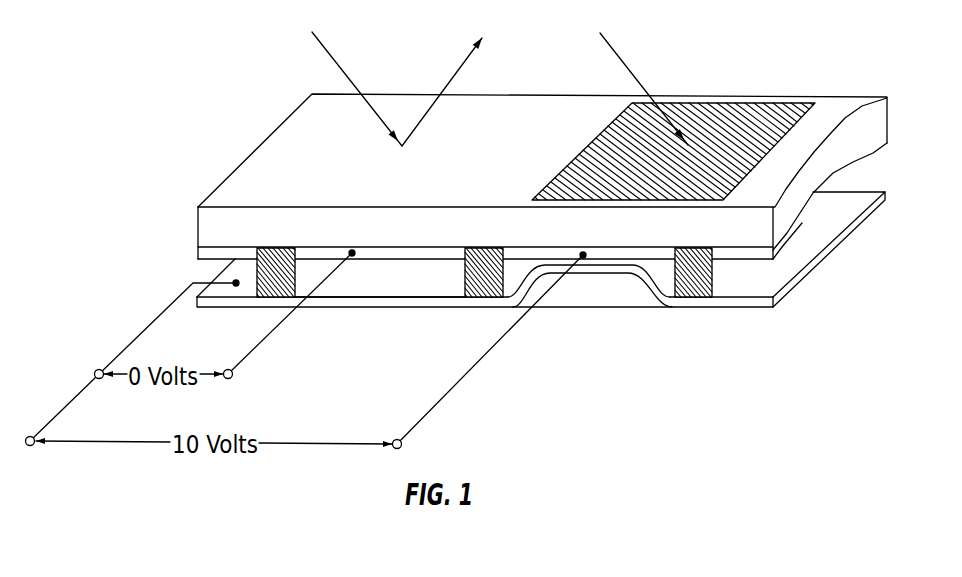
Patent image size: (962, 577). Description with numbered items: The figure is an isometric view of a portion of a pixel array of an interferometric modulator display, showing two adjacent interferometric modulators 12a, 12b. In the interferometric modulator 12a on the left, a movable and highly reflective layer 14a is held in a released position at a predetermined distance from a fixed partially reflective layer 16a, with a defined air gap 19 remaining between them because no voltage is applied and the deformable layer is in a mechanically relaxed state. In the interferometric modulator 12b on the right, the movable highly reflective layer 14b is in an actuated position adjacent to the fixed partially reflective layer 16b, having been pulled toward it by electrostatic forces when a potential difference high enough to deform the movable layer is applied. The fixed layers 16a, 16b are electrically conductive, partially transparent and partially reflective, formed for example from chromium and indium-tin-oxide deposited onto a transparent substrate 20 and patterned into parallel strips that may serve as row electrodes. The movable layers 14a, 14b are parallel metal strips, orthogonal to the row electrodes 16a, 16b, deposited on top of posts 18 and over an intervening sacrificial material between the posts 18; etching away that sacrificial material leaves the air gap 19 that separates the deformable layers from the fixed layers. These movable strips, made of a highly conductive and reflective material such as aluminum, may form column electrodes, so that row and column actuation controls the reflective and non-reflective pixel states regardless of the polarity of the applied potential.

The interferometric modulator 12a is at (305, 160).
The interferometric modulator 12b is at (742, 125).
The movable highly reflective layer 14a is at (309, 306).
The movable highly reflective layer 14b is at (530, 283).
The fixed partially reflective layer 16a is at (375, 254).
The fixed partially reflective layer 16b is at (563, 266).
The posts 18 is at (272, 300).
The air gap 19 is at (422, 275).
The transparent substrate 20 is at (818, 170).